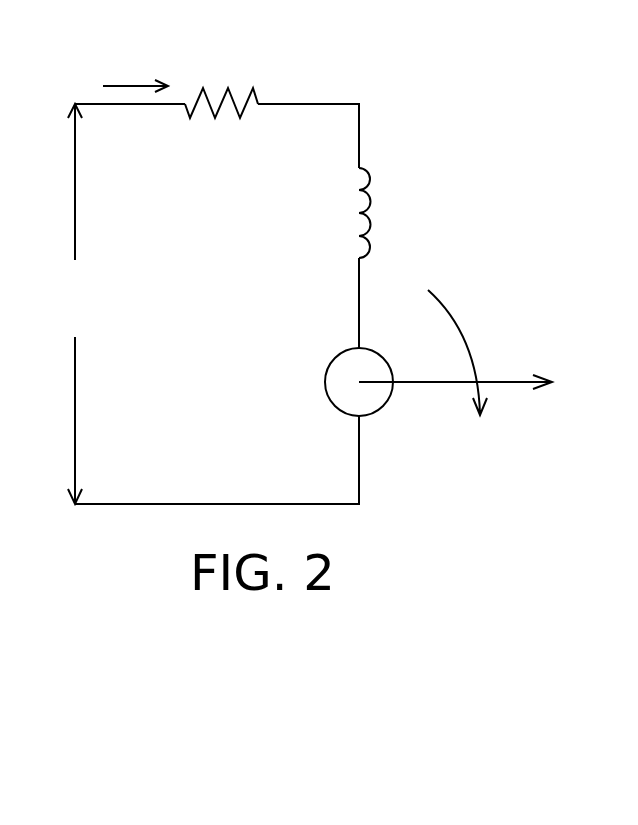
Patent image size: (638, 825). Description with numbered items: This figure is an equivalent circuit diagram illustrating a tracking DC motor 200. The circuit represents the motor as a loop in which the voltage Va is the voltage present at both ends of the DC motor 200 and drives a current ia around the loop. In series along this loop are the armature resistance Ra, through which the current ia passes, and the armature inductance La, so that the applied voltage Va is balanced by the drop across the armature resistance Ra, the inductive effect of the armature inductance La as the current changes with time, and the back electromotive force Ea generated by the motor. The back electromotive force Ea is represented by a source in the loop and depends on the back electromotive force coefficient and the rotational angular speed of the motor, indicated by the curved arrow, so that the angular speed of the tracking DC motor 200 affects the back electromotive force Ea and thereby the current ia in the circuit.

The tracking DC motor 200 is at (306, 274).
The armature resistance Ra is at (216, 82).
The armature inductance La is at (353, 216).
The back electromotive force Ea is at (325, 378).
The voltage at both ends of the DC motor Va is at (72, 304).
The current value passing through Ra ia is at (135, 72).